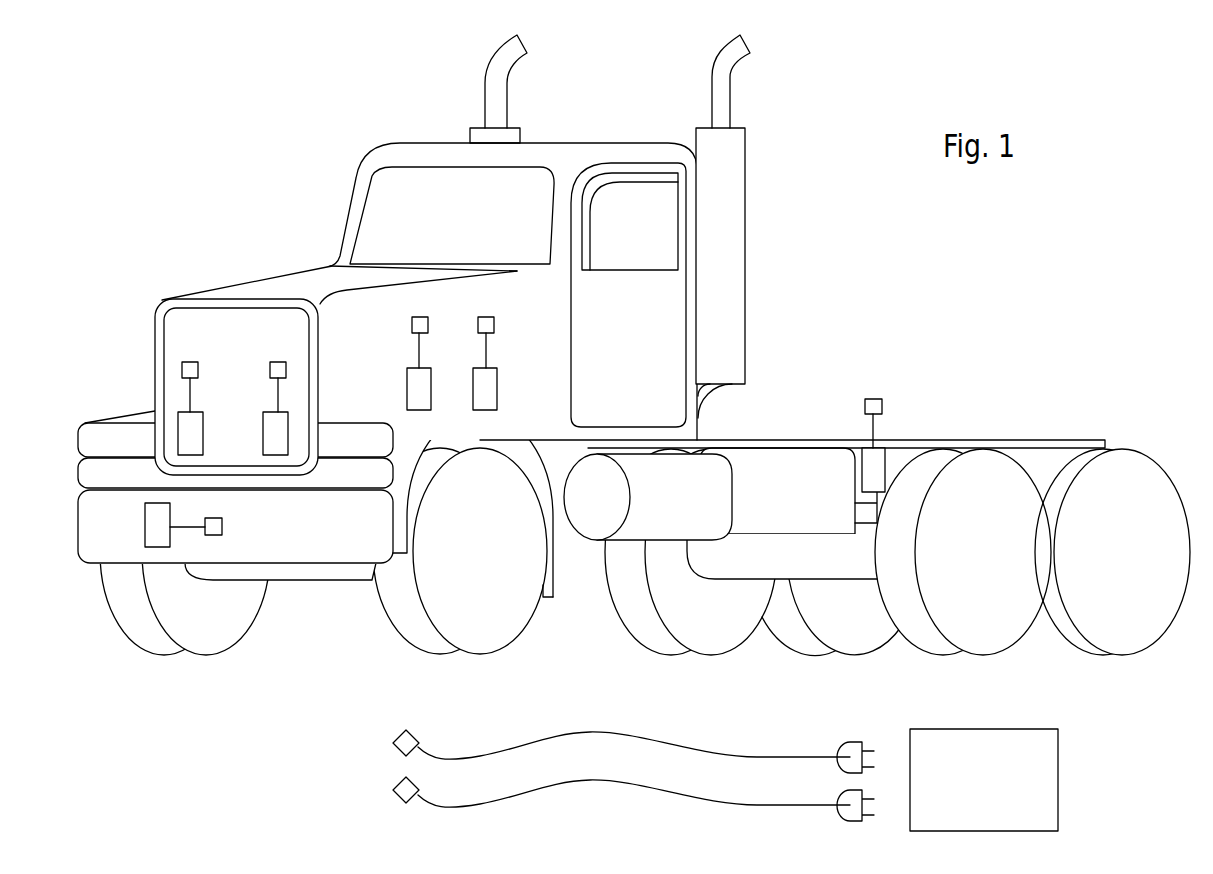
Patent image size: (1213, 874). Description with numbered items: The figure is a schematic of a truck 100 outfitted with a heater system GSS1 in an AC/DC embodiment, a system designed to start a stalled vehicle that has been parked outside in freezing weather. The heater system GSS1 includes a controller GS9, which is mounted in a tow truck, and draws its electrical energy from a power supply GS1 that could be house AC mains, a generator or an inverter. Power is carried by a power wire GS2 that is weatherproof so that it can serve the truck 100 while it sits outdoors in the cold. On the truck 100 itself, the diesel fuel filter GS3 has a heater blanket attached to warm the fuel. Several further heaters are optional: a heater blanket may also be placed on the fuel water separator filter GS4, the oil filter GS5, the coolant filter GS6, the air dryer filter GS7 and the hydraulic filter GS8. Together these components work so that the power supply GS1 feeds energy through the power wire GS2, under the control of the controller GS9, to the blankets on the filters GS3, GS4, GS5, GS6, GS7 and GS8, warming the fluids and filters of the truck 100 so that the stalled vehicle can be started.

The truck 100 is at (626, 379).
The power supply GS1 is at (1030, 780).
The power wire GS2 is at (677, 743).
The diesel fuel filter GS3 is at (486, 390).
The fuel water separator filter GS4 is at (414, 392).
The oil filter GS5 is at (273, 418).
The coolant filter GS6 is at (182, 427).
The air dryer filter GS7 is at (153, 533).
The hydraulic filter GS8 is at (873, 458).
The controller GS9 is at (418, 743).
The heater system GSS1 is at (145, 672).